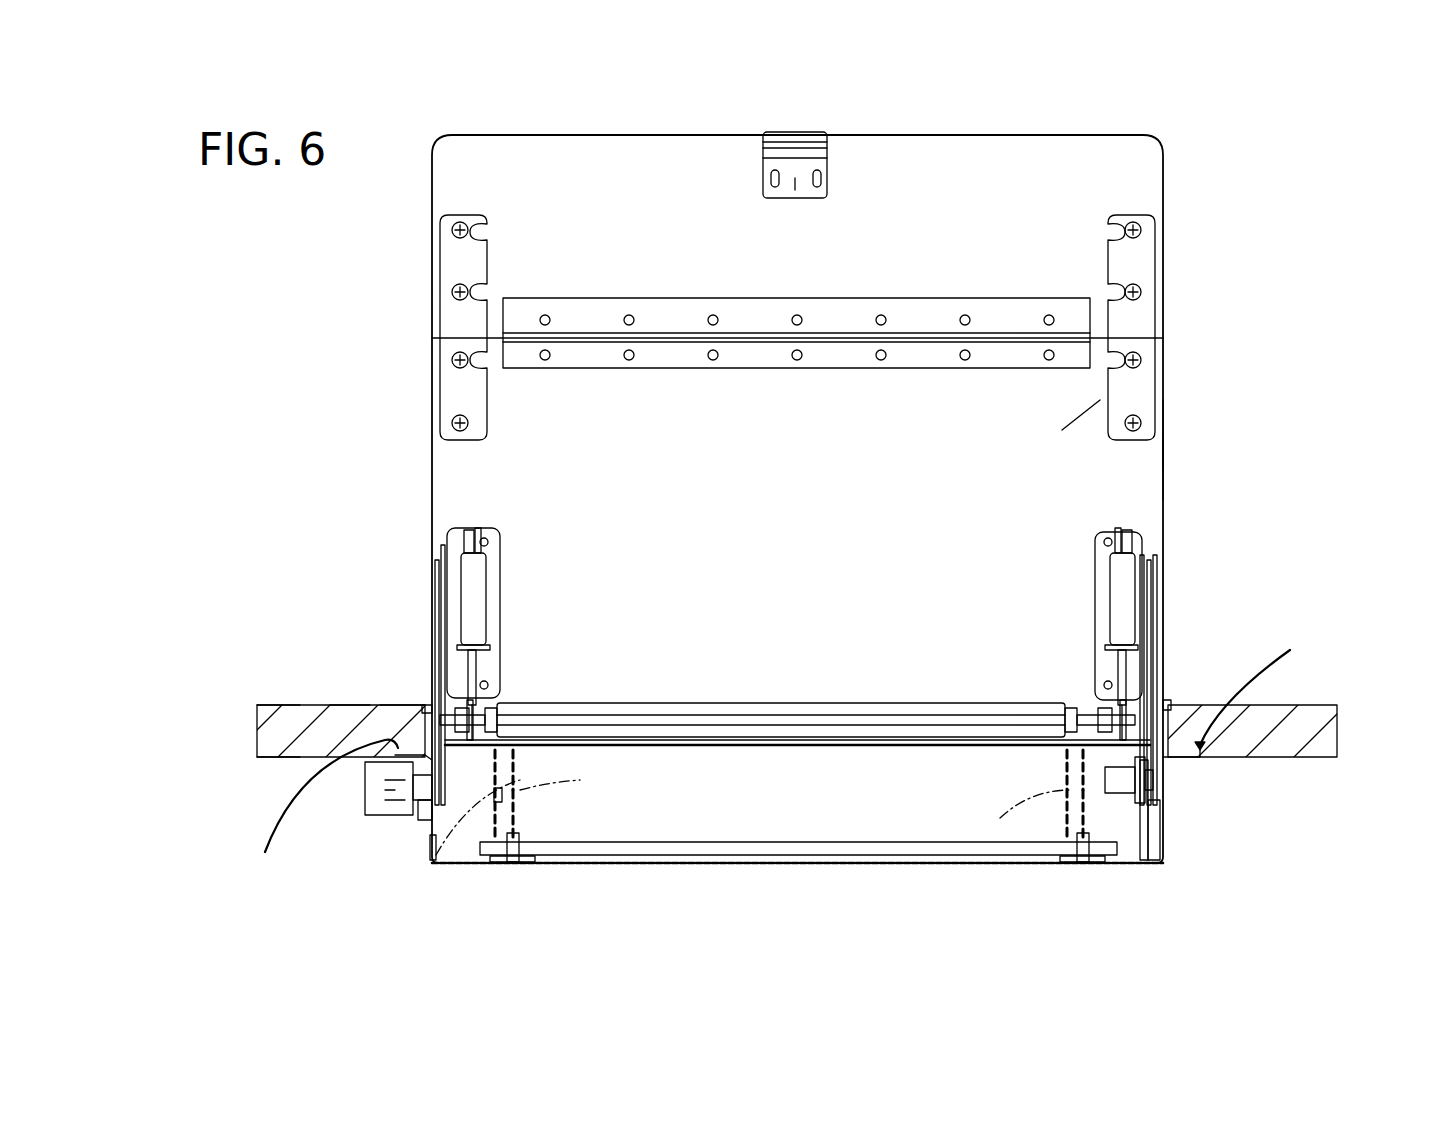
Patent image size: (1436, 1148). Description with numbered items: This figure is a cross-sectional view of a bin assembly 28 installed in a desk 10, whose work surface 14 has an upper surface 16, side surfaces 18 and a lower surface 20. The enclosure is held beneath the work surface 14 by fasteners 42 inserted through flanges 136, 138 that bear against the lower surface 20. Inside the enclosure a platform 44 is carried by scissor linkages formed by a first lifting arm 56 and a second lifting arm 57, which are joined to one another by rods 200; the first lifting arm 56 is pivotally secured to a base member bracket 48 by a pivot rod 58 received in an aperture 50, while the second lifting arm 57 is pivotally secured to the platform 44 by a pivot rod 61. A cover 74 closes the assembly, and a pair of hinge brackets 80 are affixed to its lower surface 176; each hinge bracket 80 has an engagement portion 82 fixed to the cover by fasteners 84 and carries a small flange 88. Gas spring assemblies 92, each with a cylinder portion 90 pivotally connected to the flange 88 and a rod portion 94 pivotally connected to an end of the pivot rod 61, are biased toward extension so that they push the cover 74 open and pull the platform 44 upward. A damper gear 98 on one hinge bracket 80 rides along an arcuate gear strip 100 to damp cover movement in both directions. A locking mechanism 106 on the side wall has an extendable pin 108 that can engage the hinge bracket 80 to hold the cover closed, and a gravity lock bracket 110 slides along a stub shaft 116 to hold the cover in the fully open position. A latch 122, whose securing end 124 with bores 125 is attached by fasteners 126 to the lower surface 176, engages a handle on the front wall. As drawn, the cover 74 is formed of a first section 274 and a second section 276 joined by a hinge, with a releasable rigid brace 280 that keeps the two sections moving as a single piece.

The desk 10 is at (352, 682).
The work surface 14 is at (396, 705).
The upper surface 16 is at (290, 702).
The side surfaces 18 is at (258, 735).
The lower surface 20 is at (292, 758).
The bin assembly 28 is at (1222, 425).
The fasteners 42 is at (781, 754).
The platform 44 is at (795, 696).
The base member bracket 48 is at (513, 860).
The aperture 50 is at (520, 835).
The first lifting arm 56 is at (500, 810).
The second lifting arm 57 is at (432, 860).
The pivot rod 58 is at (705, 840).
The pivot rod 61 is at (795, 720).
The cover 74 is at (1168, 170).
The hinge brackets 80 is at (524, 601).
The engagement portion 82 is at (500, 578).
The fasteners 84 is at (484, 540).
The flange 88 is at (1142, 560).
The cylinder portion 90 is at (468, 560).
The gas spring assemblies 92 is at (505, 575).
The rod portion 94 is at (478, 675).
The damper gear 98 is at (1103, 778).
The gear strip 100 is at (1152, 830).
The locking mechanism 106 is at (368, 792).
The pin 108 is at (418, 820).
The gravity lock bracket 110 is at (433, 582).
The stub shaft 116 is at (458, 780).
The latch 122 is at (800, 161).
The securing end 124 is at (795, 188).
The bores 125 is at (820, 166).
The fasteners 126 is at (815, 188).
The flange 136 is at (432, 725).
The flange 138 is at (1200, 760).
The lower surface 176 is at (1140, 466).
The rods 200 is at (753, 815).
The first section 274 is at (1062, 432).
The second section 276 is at (583, 312).
The rigid brace 280 is at (455, 262).